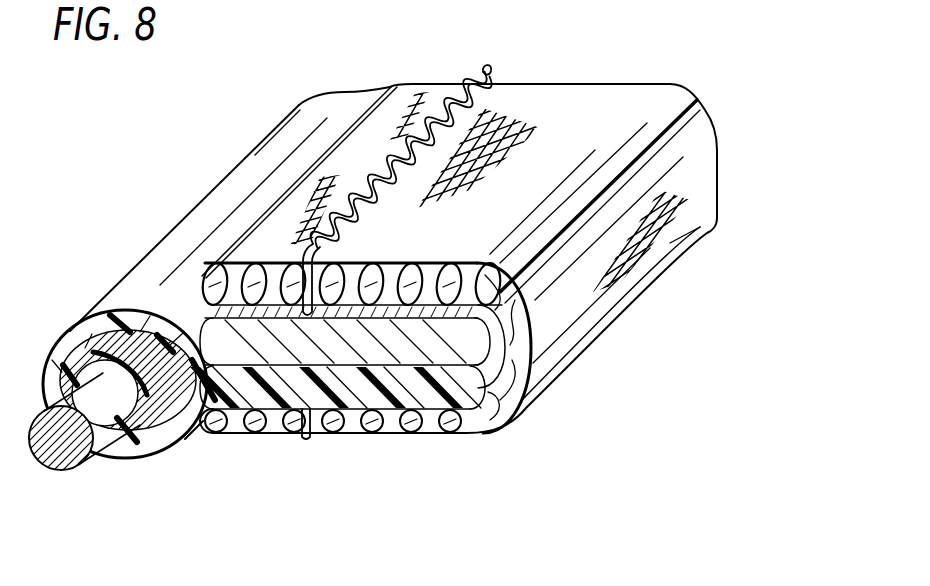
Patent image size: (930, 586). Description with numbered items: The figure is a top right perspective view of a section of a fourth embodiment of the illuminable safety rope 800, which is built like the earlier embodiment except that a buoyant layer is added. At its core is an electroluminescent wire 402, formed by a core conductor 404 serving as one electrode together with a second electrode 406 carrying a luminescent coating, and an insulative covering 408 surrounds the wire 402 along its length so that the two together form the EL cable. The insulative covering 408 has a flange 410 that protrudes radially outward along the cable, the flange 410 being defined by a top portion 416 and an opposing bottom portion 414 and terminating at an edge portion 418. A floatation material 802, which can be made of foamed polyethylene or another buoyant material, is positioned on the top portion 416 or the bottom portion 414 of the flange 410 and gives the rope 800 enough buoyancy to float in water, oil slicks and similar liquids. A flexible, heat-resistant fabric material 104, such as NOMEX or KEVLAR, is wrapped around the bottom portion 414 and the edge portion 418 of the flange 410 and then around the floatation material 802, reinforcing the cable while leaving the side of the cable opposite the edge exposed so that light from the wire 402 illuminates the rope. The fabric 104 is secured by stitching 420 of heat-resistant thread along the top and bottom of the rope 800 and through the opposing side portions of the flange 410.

The safety rope 800 is at (718, 446).
The fabric material 104 is at (600, 230).
The insulative covering 408 is at (198, 303).
The electroluminescent (EL) wire 402 is at (91, 468).
The core conductor 404 is at (155, 517).
The insulation 406 is at (137, 455).
The stitching 420 is at (484, 70).
The flange 410 is at (251, 432).
The bottom portion 414 is at (360, 378).
The top portion 416 is at (380, 422).
The edge portion 418 is at (461, 436).
The floatation material 802 is at (542, 370).